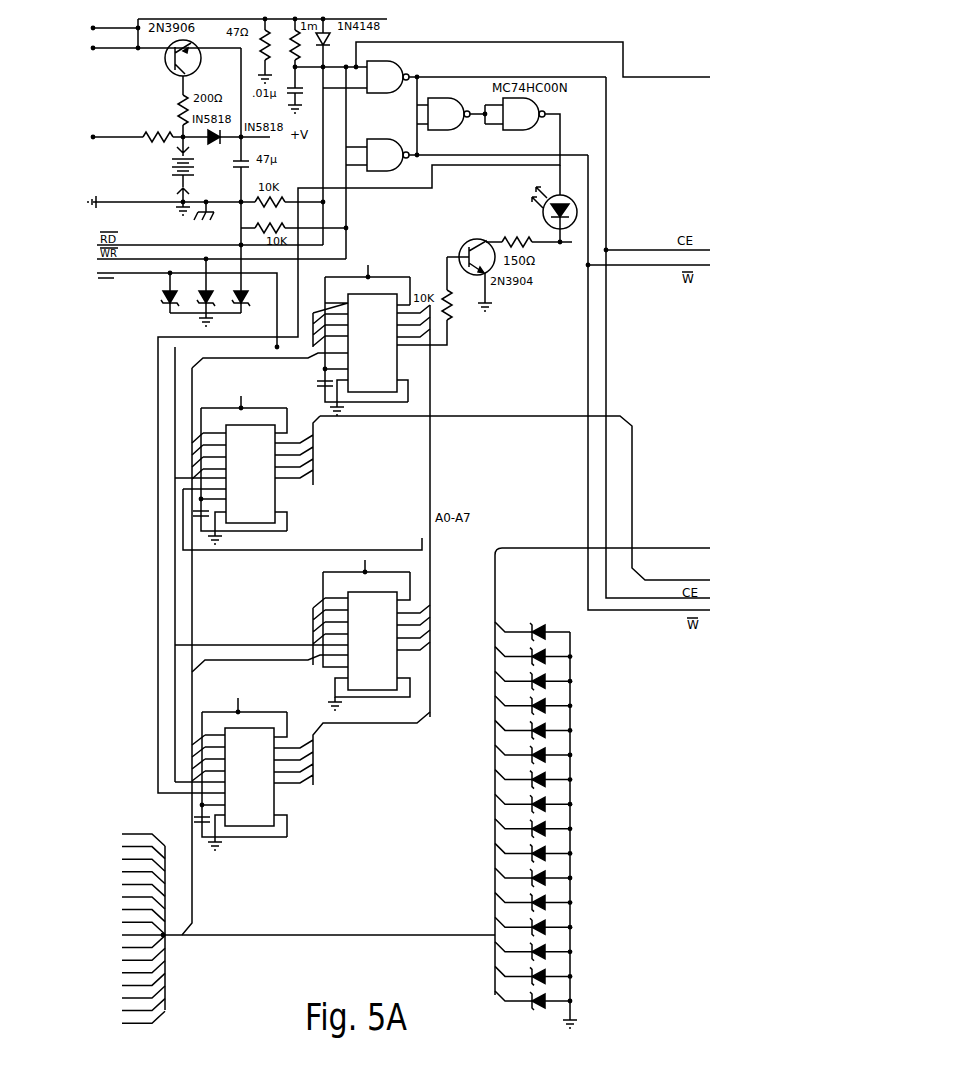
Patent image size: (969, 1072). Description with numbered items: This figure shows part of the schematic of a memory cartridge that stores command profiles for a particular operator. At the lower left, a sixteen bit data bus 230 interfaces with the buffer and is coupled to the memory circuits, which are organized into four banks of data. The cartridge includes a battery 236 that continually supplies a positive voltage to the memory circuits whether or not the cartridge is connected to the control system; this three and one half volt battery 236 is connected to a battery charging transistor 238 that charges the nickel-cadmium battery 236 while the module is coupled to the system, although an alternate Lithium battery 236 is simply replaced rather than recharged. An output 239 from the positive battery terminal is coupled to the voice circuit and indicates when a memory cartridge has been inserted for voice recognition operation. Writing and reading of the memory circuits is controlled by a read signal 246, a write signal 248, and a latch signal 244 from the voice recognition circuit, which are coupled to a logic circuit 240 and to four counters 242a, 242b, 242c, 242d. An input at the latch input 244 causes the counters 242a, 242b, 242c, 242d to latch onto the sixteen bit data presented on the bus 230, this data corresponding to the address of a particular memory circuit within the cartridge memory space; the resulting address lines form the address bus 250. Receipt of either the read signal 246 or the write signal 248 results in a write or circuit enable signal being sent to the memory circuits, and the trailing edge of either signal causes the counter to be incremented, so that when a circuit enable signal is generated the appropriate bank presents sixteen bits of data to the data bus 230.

The data bus 230 is at (299, 935).
The battery 236 is at (168, 184).
The battery charging transistor 238 is at (165, 56).
The output 239 is at (97, 142).
The logic circuit 240 is at (475, 58).
The counter 242a is at (265, 808).
The counter 242b is at (388, 664).
The counter 242c is at (263, 512).
The counter 242d is at (388, 368).
The latch signal 244 is at (97, 276).
The read signal 246 is at (98, 245).
The write signal 248 is at (179, 292).
The address bus 250 is at (460, 419).